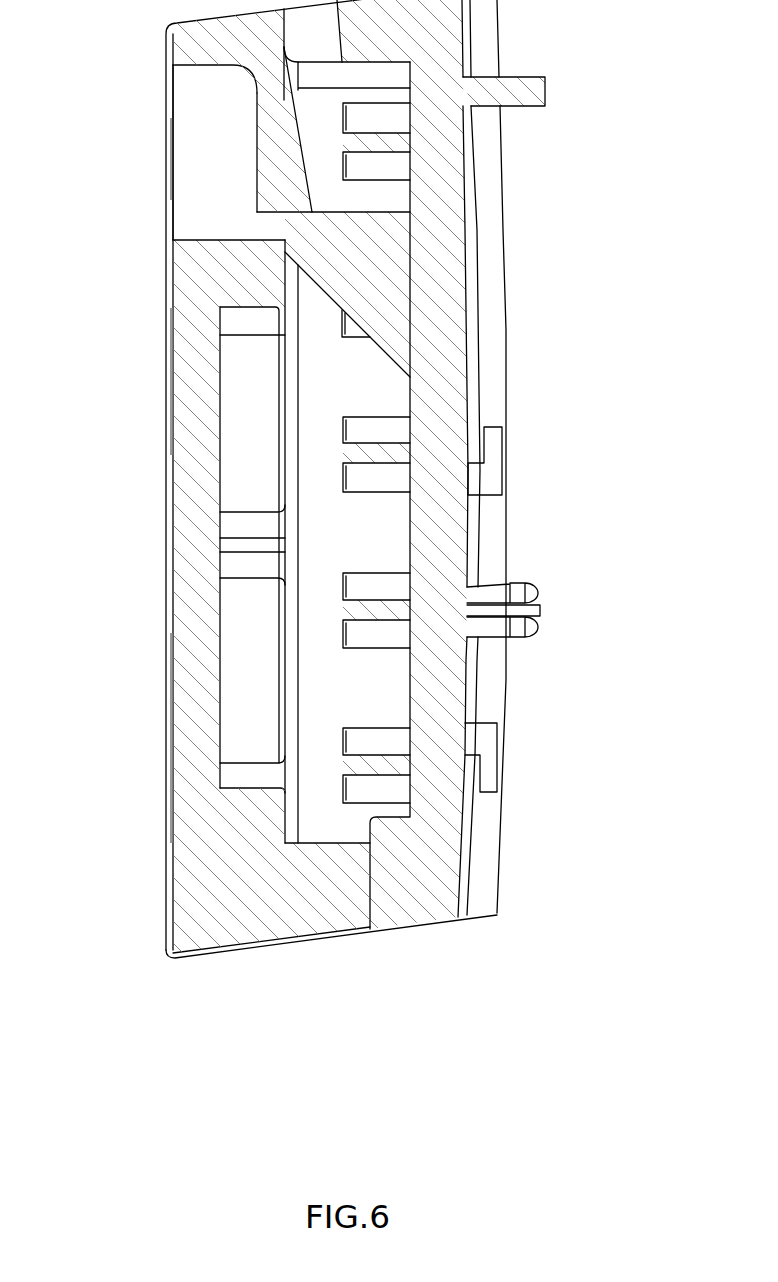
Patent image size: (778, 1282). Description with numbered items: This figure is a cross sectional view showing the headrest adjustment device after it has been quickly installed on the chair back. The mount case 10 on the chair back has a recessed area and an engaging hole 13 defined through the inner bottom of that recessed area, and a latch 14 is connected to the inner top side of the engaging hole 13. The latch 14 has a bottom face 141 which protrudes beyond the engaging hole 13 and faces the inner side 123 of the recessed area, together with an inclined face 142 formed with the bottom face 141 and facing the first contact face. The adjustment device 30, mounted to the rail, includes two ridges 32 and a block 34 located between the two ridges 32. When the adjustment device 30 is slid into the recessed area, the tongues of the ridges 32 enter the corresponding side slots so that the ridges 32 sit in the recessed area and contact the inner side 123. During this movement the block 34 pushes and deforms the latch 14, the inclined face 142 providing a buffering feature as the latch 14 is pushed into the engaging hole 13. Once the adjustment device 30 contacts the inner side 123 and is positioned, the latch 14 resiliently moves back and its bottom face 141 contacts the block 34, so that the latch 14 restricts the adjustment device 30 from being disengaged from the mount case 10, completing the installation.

The mount case 10 is at (150, 581).
The engaging hole 13 is at (185, 213).
The latch 14 is at (262, 165).
The bottom face 141 is at (272, 237).
The inclined face 142 is at (286, 122).
The adjustment device 30 is at (520, 341).
The ridges 32 is at (306, 787).
The block 34 is at (329, 298).
The inner side 123 is at (312, 844).